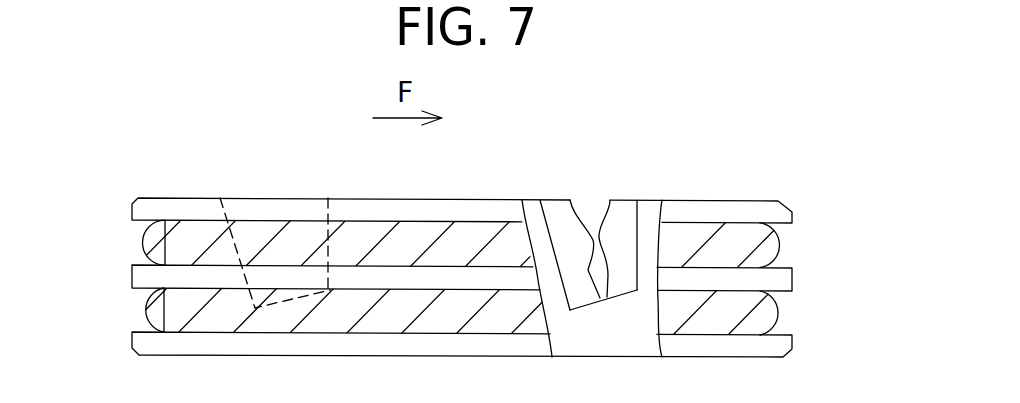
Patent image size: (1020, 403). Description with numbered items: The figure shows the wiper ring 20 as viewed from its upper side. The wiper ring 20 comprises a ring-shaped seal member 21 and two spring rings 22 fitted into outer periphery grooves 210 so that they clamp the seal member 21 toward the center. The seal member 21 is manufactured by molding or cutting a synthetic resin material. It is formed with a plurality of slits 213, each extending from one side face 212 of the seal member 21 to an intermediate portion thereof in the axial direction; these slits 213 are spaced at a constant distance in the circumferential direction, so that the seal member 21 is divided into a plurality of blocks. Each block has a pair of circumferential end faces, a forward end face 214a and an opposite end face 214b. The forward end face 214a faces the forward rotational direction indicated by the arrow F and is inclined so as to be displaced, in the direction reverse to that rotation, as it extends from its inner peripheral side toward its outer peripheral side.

The wiper ring 20 is at (741, 71).
The seal member 21 is at (198, 198).
The spring ring 22 is at (152, 315).
The outer periphery groove 210 is at (752, 328).
The side face 212 is at (475, 200).
The slit 213 is at (287, 207).
The forward end face 214a is at (558, 214).
The end face 214b is at (626, 216).